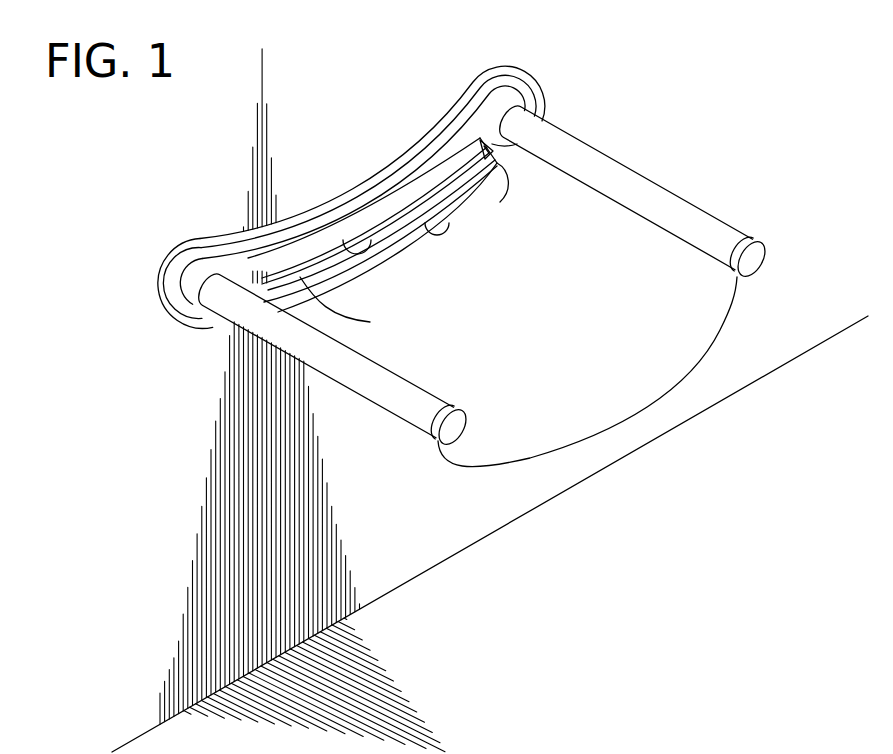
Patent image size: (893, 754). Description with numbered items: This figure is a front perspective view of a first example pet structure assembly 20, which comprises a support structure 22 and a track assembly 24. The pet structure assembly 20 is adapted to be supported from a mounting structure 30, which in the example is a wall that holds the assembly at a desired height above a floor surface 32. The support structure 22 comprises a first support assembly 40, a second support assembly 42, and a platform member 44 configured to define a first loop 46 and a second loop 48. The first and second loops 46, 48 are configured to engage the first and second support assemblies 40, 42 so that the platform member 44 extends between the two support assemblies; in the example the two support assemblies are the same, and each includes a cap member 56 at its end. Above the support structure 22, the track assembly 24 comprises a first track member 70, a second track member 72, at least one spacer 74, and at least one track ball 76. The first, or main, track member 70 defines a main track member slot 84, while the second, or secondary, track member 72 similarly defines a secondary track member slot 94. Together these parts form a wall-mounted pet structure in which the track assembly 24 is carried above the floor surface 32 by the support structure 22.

The pet structure assembly 20 is at (636, 102).
The support structure 22 is at (646, 146).
The track assembly 24 is at (327, 184).
The mounting structure 30 is at (178, 529).
The floor surface 32 is at (422, 675).
The first support assembly 40 is at (326, 373).
The second support assembly 42 is at (629, 188).
The platform member 44 is at (690, 316).
The first loop 46 is at (377, 378).
The second loop 48 is at (680, 216).
The cap member 56 is at (755, 257).
The first track member 70 is at (400, 160).
The second track member 72 is at (394, 237).
The spacer 74 is at (505, 80).
The track ball 76 is at (372, 242).
The main track member slot 84 is at (348, 307).
The secondary track member slot 94 is at (432, 215).